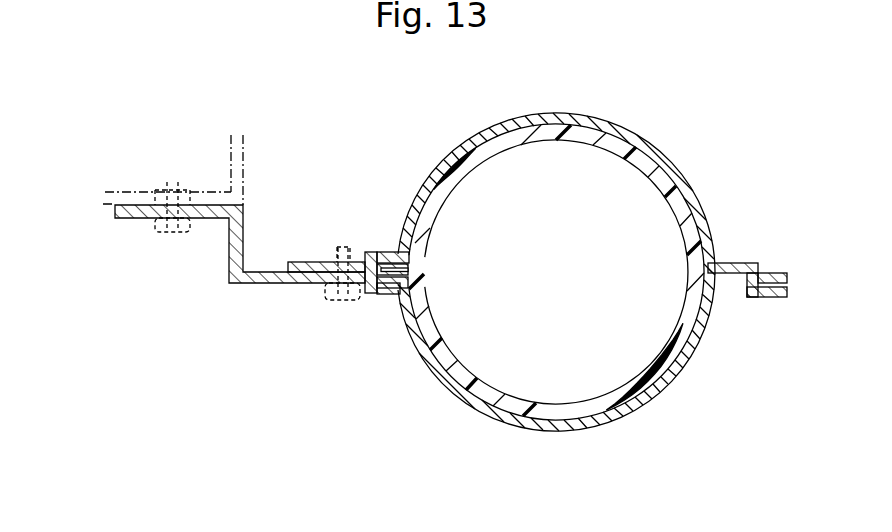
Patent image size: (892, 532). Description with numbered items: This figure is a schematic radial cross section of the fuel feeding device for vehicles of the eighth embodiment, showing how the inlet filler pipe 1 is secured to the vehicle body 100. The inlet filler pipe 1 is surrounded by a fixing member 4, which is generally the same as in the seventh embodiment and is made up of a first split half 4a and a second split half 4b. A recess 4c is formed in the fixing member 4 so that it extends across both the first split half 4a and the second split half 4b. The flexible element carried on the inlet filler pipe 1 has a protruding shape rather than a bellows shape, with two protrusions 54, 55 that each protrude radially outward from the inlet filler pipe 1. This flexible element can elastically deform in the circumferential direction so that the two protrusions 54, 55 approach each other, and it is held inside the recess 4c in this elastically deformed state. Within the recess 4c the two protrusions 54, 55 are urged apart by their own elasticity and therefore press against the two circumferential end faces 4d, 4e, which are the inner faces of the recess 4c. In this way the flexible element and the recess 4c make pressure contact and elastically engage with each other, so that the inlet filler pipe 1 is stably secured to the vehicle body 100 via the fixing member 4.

The inlet filler pipe 1 is at (533, 131).
The fixing member 4 is at (637, 142).
The first split half 4a is at (555, 428).
The second split half 4b is at (450, 160).
The recess 4c is at (370, 252).
The circumferential end face 4d is at (412, 268).
The circumferential end face 4e is at (379, 289).
The protrusion 54 is at (397, 289).
The protrusion 55 is at (395, 262).
The vehicle body 100 is at (202, 198).